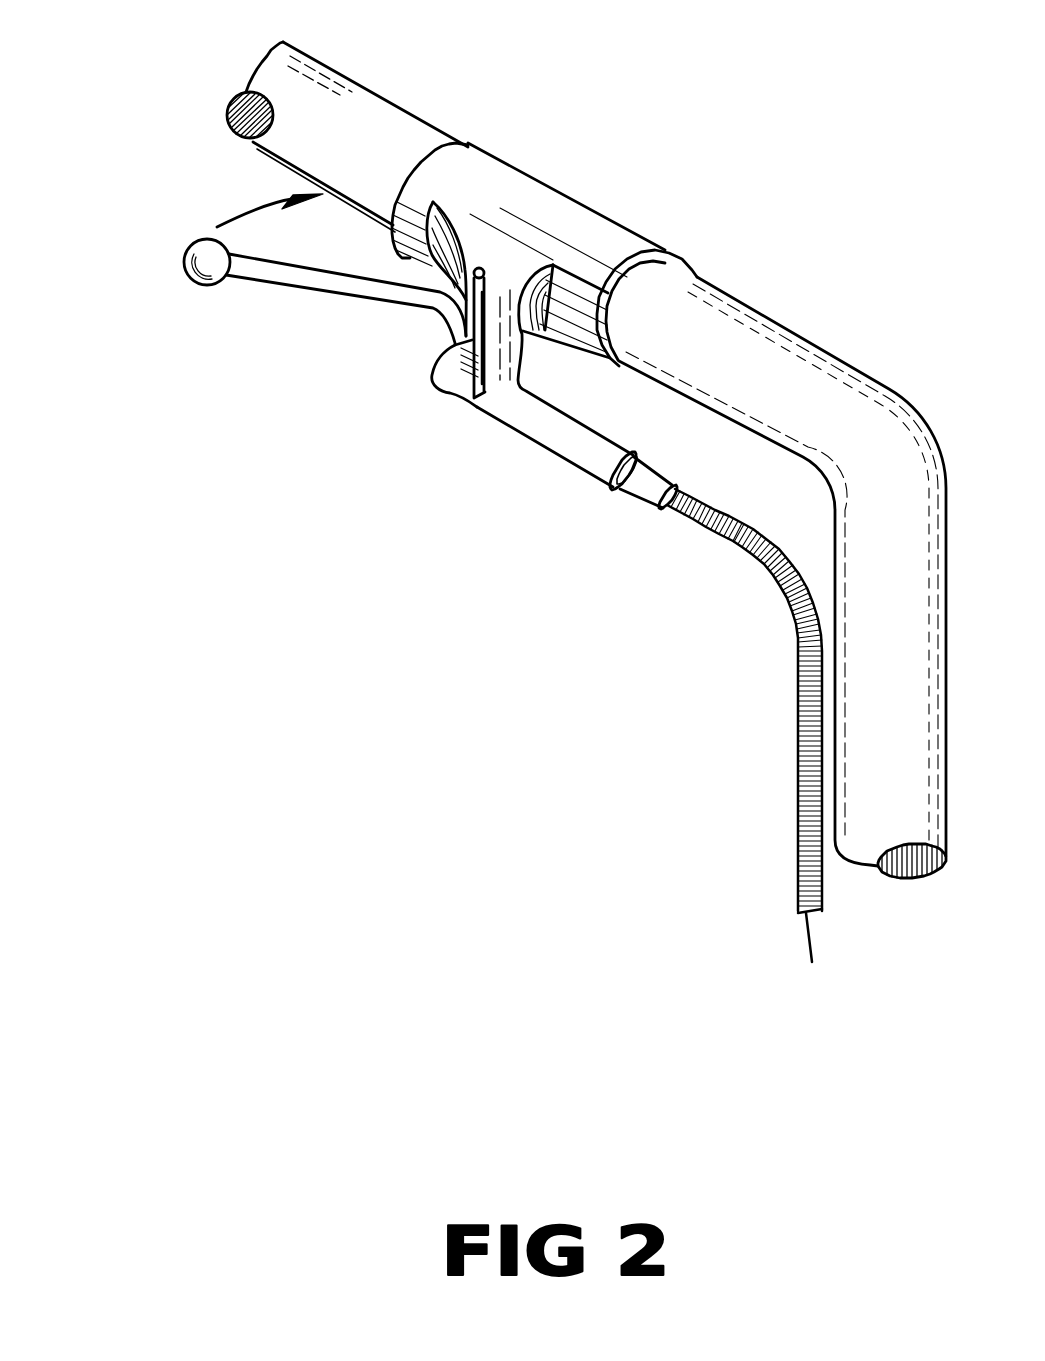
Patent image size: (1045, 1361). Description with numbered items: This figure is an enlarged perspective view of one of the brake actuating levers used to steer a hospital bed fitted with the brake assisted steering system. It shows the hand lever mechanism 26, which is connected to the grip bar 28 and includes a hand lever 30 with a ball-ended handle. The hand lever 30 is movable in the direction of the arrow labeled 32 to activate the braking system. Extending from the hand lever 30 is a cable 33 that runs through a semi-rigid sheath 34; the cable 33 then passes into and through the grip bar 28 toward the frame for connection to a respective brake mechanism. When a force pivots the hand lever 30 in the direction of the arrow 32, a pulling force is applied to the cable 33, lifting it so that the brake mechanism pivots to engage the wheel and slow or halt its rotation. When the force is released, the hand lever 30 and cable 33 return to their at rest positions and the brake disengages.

The hand lever mechanism 26 is at (742, 205).
The grip bar 28 is at (300, 90).
The hand lever 30 is at (330, 303).
The arrow 32 is at (250, 207).
The cable 33 is at (813, 943).
The semi-rigid sheath 34 is at (714, 535).